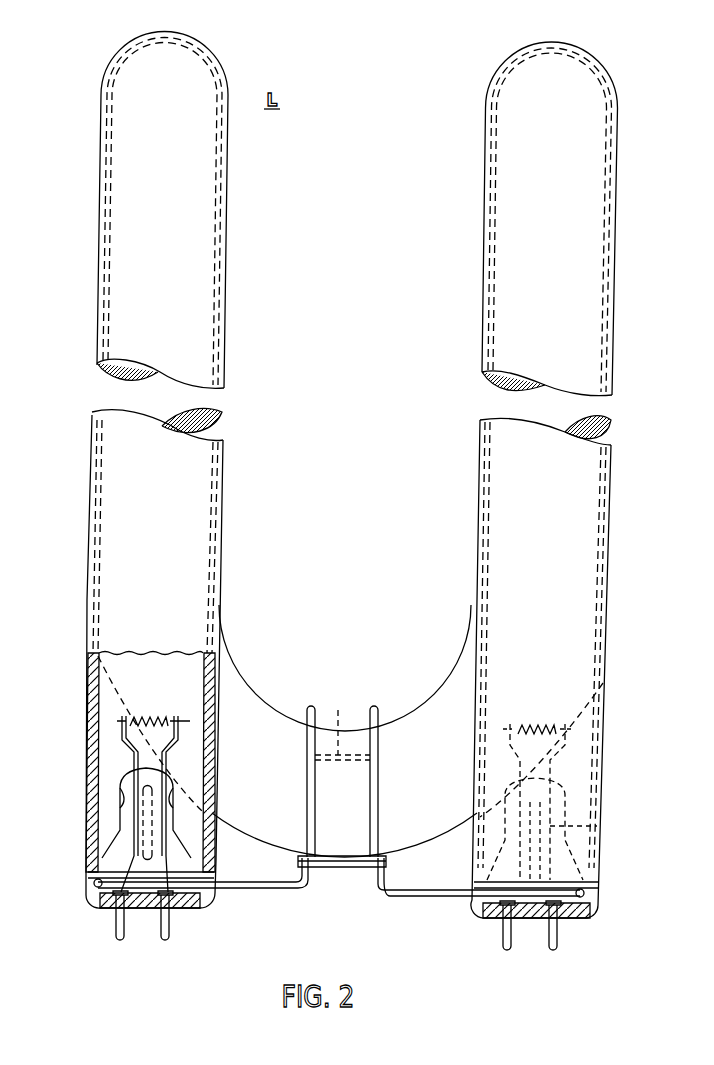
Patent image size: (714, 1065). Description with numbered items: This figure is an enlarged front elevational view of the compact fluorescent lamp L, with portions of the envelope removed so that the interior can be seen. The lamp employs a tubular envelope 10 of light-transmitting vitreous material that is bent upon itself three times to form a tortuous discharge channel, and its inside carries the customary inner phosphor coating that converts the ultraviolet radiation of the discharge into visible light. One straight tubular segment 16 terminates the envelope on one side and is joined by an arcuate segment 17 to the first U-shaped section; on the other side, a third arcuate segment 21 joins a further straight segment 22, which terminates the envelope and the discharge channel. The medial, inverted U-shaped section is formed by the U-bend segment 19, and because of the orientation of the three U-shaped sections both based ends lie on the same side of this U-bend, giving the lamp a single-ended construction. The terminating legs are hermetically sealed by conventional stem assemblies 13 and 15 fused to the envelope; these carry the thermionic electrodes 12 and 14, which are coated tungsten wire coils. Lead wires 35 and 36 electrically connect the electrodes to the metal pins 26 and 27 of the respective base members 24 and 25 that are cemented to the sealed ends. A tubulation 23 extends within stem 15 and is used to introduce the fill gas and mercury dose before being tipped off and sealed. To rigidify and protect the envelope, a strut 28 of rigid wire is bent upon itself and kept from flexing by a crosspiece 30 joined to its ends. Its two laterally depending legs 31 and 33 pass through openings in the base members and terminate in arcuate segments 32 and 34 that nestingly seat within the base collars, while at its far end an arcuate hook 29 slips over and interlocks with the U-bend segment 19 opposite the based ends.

The envelope 10 is at (228, 222).
The electrode 12 is at (520, 722).
The stem assembly 13 is at (553, 800).
The electrode 14 is at (150, 718).
The stem assembly 15 is at (128, 828).
The straight tubular segment 16 is at (453, 390).
The arcuate segment 17 is at (552, 43).
The arcuate segment 19 is at (260, 700).
The arcuate segment 21 is at (162, 35).
The straight segment 22 is at (222, 365).
The tubulation 23 is at (140, 845).
The base member 24 is at (480, 905).
The base member 25 is at (94, 890).
The metal pins 26 is at (552, 952).
The metal pins 27 is at (163, 940).
The strut 28 is at (307, 800).
The arcuate hook 29 is at (316, 718).
The crosspiece 30 is at (332, 862).
The leg 31 is at (398, 895).
The arcuate segment 32 is at (590, 912).
The leg 33 is at (280, 888).
The arcuate segment 34 is at (110, 880).
The lead wires 35 is at (575, 830).
The lead wires 36 is at (125, 746).